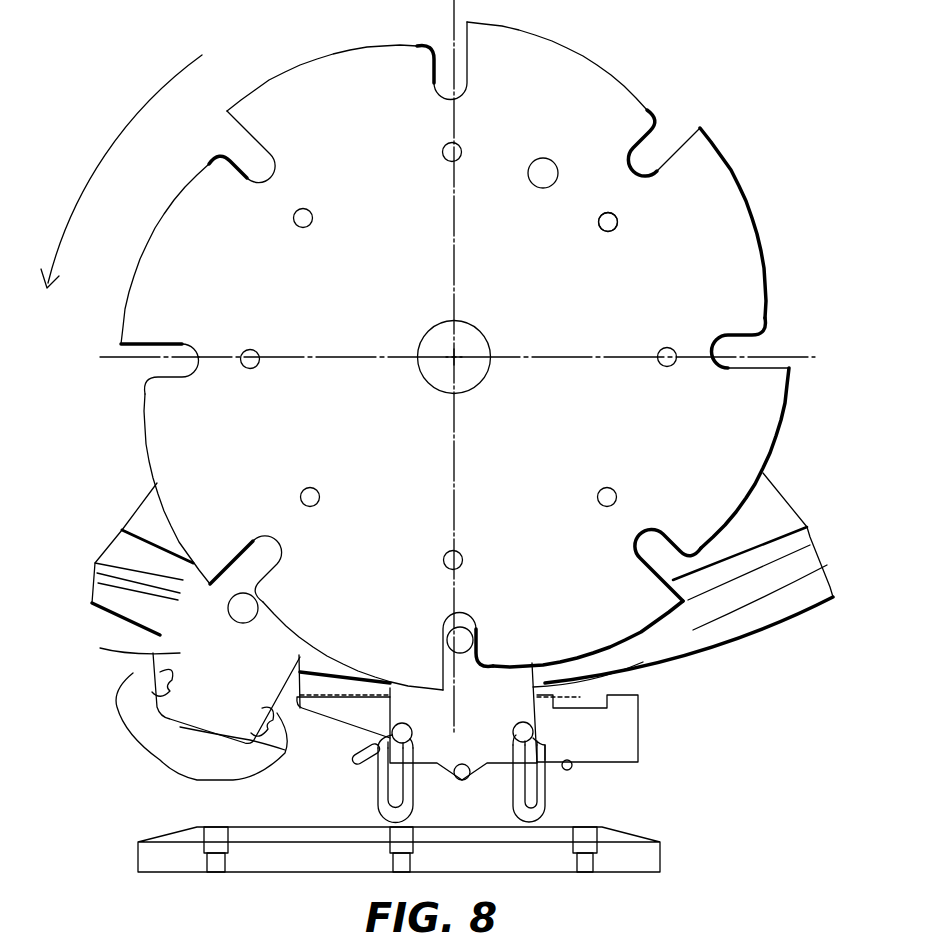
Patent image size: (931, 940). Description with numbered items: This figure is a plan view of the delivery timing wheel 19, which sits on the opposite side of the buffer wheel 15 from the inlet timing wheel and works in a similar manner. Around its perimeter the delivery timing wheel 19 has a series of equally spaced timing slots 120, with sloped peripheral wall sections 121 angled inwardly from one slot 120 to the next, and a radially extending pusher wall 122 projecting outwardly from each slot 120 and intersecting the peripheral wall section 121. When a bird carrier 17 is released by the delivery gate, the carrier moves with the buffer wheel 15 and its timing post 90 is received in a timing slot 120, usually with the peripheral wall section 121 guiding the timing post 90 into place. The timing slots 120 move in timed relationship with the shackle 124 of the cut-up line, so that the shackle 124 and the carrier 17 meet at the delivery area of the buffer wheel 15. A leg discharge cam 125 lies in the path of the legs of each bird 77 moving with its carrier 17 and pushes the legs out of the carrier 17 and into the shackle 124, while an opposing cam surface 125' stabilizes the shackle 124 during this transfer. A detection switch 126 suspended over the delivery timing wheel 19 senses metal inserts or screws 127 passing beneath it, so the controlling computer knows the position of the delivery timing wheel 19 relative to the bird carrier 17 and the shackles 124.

The delivery timing wheel 19 is at (418, 356).
The timing slots 120 is at (258, 176).
The sloped peripheral wall sections 121 is at (143, 443).
The pusher wall 122 is at (120, 352).
The detection switch 126 is at (557, 160).
The metal inserts or screws 127 is at (616, 227).
The timing post 90 is at (254, 606).
The bird carrier 17 is at (178, 651).
The buffer wheel 15 is at (734, 652).
The bird 77 is at (150, 768).
The leg discharge cam 125 is at (353, 760).
The shackle 124 is at (547, 797).
The opposing cam surface 125' is at (399, 875).